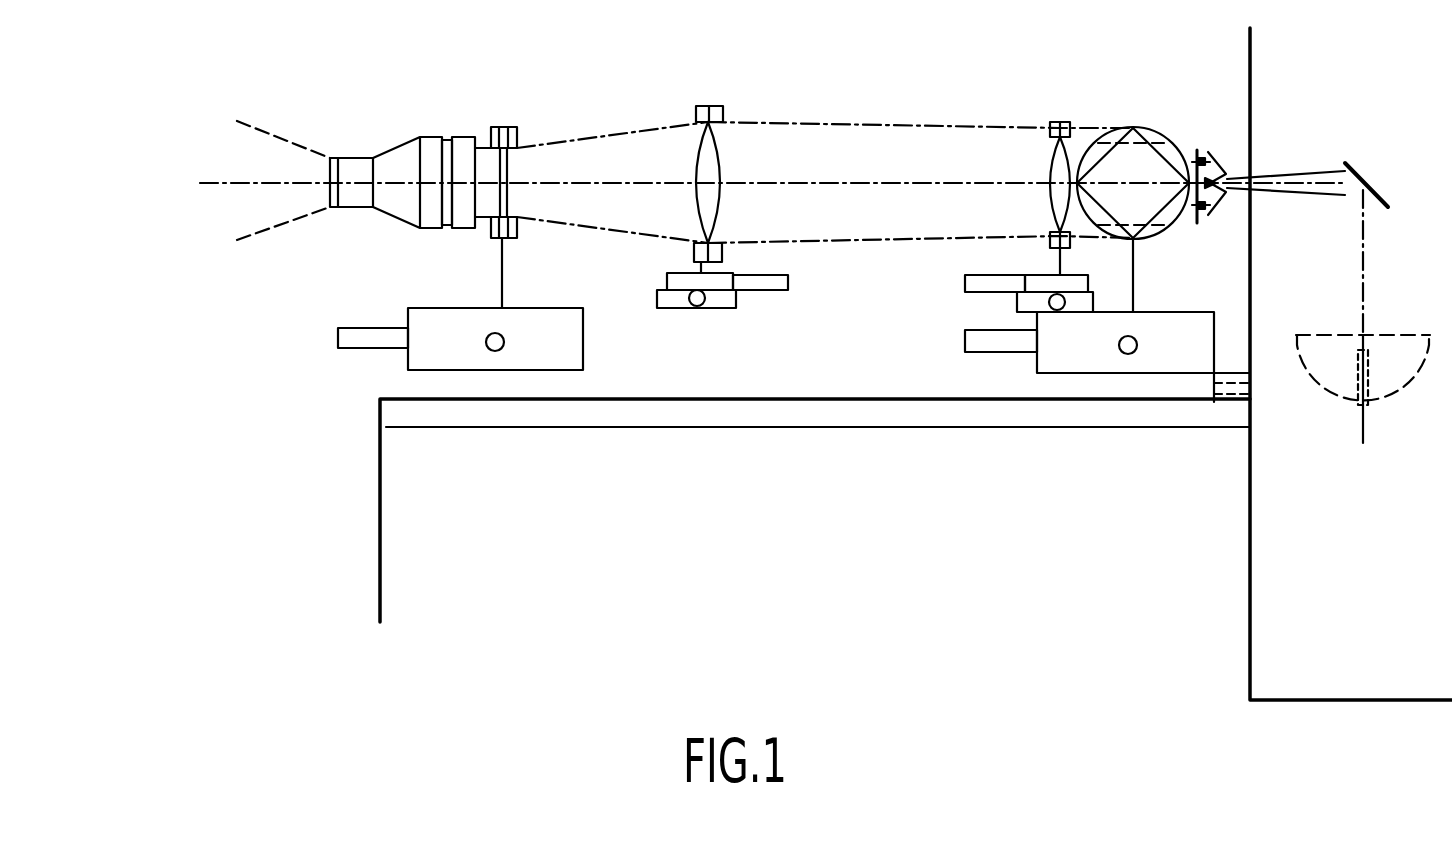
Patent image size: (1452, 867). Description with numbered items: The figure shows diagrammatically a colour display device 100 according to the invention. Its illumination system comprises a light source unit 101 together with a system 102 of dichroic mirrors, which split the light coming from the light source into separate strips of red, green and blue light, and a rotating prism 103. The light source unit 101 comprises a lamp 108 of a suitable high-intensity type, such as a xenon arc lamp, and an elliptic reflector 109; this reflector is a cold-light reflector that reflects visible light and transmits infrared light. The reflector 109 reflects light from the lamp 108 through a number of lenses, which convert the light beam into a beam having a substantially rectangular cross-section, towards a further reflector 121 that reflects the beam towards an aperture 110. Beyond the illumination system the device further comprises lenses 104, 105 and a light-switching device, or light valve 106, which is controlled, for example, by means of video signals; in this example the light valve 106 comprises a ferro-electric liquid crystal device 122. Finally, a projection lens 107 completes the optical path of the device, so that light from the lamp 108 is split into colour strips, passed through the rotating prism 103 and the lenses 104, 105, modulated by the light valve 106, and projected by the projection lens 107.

The colour display device 100 is at (270, 480).
The light source unit 101 is at (1249, 40).
The system of dichroic mirrors 102 is at (1205, 132).
The rotating prism 103 is at (1121, 110).
The lens 104 is at (1052, 112).
The lens 105 is at (705, 105).
The light valve 106 is at (502, 126).
The projection lens 107 is at (396, 147).
The lamp 108 is at (1352, 387).
The elliptic reflector 109 is at (1413, 377).
The aperture 110 is at (1252, 175).
The further reflector 121 is at (1355, 168).
The ferro-electric liquid crystal device 122 is at (517, 167).